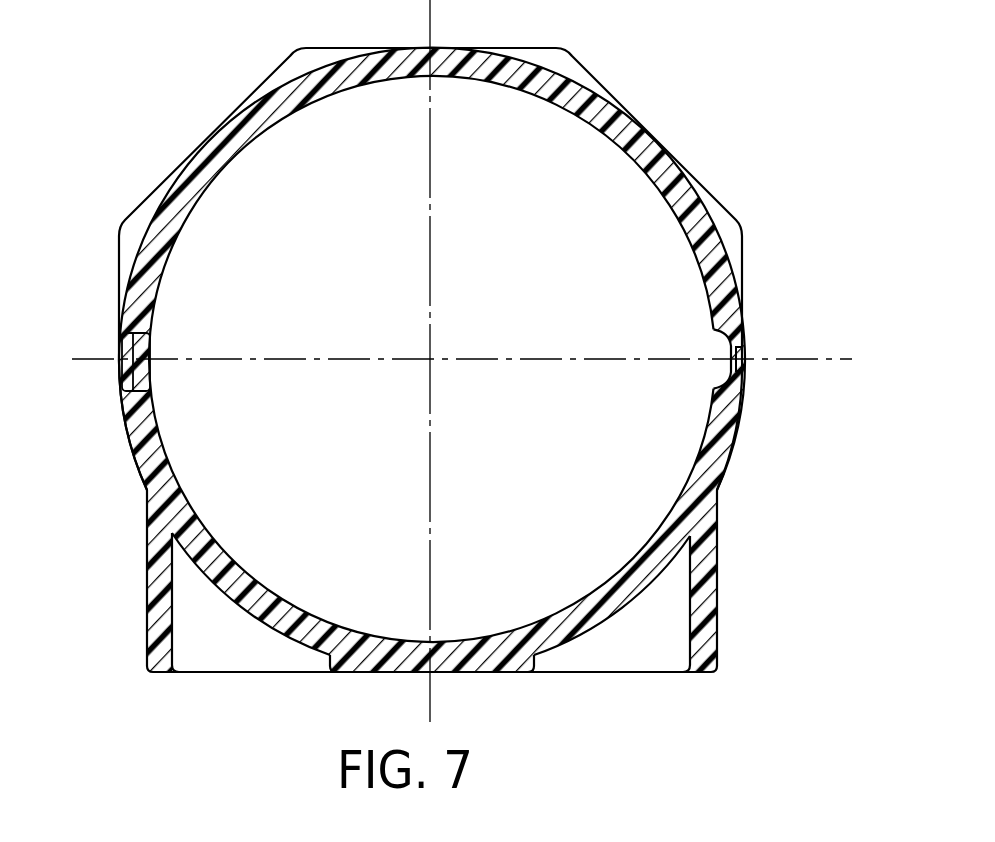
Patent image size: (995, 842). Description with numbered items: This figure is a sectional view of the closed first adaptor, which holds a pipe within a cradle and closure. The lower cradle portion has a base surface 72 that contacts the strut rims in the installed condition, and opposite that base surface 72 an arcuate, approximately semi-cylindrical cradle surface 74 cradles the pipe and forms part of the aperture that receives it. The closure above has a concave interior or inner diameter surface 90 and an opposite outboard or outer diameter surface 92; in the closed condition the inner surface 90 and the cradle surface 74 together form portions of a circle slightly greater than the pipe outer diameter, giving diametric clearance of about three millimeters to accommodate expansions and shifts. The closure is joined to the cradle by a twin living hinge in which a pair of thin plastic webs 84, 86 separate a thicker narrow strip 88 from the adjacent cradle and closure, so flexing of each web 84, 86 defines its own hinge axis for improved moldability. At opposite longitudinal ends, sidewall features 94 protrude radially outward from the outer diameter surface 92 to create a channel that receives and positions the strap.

The base surface 72 is at (527, 673).
The arcuate cradle surface 74 is at (197, 518).
The web 84 is at (753, 385).
The web 86 is at (753, 337).
The narrow strip 88 is at (744, 350).
The interior/inner diameter surface 90 is at (222, 165).
The outboard/outer diameter surface 92 is at (157, 215).
The sidewall features 94 is at (727, 230).